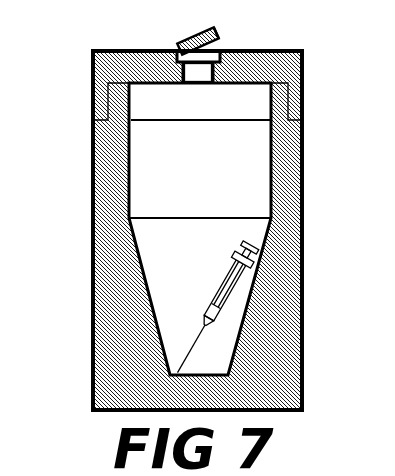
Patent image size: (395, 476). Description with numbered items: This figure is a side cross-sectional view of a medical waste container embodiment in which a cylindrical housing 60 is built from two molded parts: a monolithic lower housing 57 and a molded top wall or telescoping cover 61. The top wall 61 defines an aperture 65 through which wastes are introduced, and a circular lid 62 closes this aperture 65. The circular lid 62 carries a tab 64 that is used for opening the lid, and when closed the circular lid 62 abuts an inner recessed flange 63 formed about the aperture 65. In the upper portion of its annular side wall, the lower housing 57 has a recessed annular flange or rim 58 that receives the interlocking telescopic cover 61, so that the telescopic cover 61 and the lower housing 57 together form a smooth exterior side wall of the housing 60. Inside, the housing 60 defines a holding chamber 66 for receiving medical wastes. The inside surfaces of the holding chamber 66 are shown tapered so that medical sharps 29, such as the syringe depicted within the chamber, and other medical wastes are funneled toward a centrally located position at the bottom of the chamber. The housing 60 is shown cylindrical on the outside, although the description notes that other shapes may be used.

The medical sharps 29 is at (217, 298).
The lower housing 57 is at (304, 198).
The recessed annular flange 58 is at (92, 102).
The cylindrical housing 60 is at (76, 233).
The top wall 61 is at (289, 49).
The circular lid 62 is at (184, 42).
The inner recessed flange 63 is at (211, 59).
The tab 64 is at (212, 30).
The aperture 65 is at (190, 83).
The holding chamber 66 is at (189, 259).